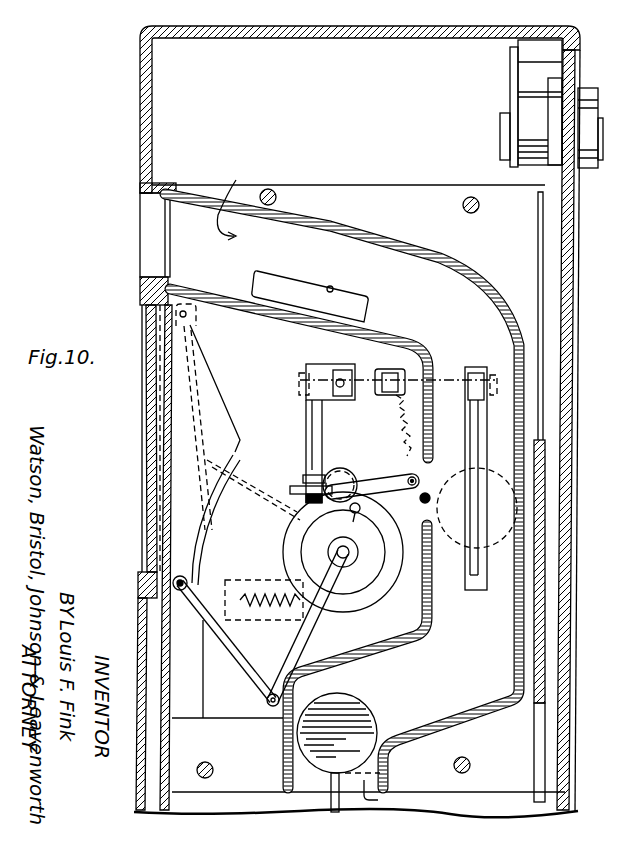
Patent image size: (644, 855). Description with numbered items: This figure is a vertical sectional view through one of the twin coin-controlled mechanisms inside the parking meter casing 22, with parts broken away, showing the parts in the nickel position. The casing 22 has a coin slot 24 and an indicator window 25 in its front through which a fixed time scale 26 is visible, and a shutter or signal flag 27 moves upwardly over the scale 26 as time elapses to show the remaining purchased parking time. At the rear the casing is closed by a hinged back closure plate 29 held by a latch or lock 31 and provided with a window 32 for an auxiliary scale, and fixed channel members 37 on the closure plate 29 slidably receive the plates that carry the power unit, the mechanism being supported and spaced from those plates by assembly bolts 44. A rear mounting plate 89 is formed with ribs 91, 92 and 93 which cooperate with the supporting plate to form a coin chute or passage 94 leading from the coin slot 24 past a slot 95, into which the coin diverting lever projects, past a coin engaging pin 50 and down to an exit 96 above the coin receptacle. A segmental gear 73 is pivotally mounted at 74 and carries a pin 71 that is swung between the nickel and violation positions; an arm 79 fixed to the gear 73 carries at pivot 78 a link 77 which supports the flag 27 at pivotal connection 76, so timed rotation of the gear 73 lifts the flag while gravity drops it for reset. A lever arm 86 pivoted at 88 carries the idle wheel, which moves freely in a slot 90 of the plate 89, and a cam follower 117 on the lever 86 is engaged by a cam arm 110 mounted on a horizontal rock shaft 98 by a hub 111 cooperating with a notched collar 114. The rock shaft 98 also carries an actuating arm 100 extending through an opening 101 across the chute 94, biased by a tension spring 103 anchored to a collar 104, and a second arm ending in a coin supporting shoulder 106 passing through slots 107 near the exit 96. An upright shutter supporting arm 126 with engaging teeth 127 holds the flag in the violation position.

The parking meter casing 22 is at (140, 141).
The coin slot 24 is at (147, 232).
The indicator window 25 is at (155, 507).
The fixed time scale 26 is at (168, 482).
The shutter or signal flag 27 is at (148, 580).
The back closure plate 29 is at (566, 688).
The latch or lock 31 is at (596, 103).
The window 32 is at (546, 492).
The fixed channel member 37 is at (552, 275).
The assembly bolt 44 is at (274, 192).
The coin engaging pin 50 is at (430, 500).
The pin 71 is at (365, 519).
The segmental gear 73 is at (358, 598).
The pivot 74 is at (347, 557).
The pivotal connection 76 is at (188, 580).
The link 77 is at (241, 662).
The pivot 78 is at (270, 707).
The arm 79 is at (306, 643).
The lever arm 86 is at (372, 480).
The pivot 88 is at (420, 482).
The rear mounting plate 89 is at (393, 195).
The slot 90 is at (340, 468).
The rib 91 is at (436, 256).
The rib 92 is at (400, 338).
The rib 93 is at (417, 650).
The coin chute or passage 94 is at (231, 199).
The slot 95 is at (330, 290).
The exit 96 is at (370, 801).
The horizontal rock shaft 98 is at (356, 372).
The actuating arm 100 is at (476, 447).
The opening 101 is at (477, 591).
The tension spring 103 is at (394, 422).
The collar 104 is at (394, 370).
The coin supporting shoulder 106 is at (343, 768).
The slot 107 is at (331, 801).
The cam arm 110 is at (307, 420).
The hub 111 is at (300, 380).
The collar 114 is at (322, 370).
The cam follower 117 is at (290, 489).
The shutter supporting arm 126 is at (208, 520).
The engaging teeth 127 is at (222, 482).